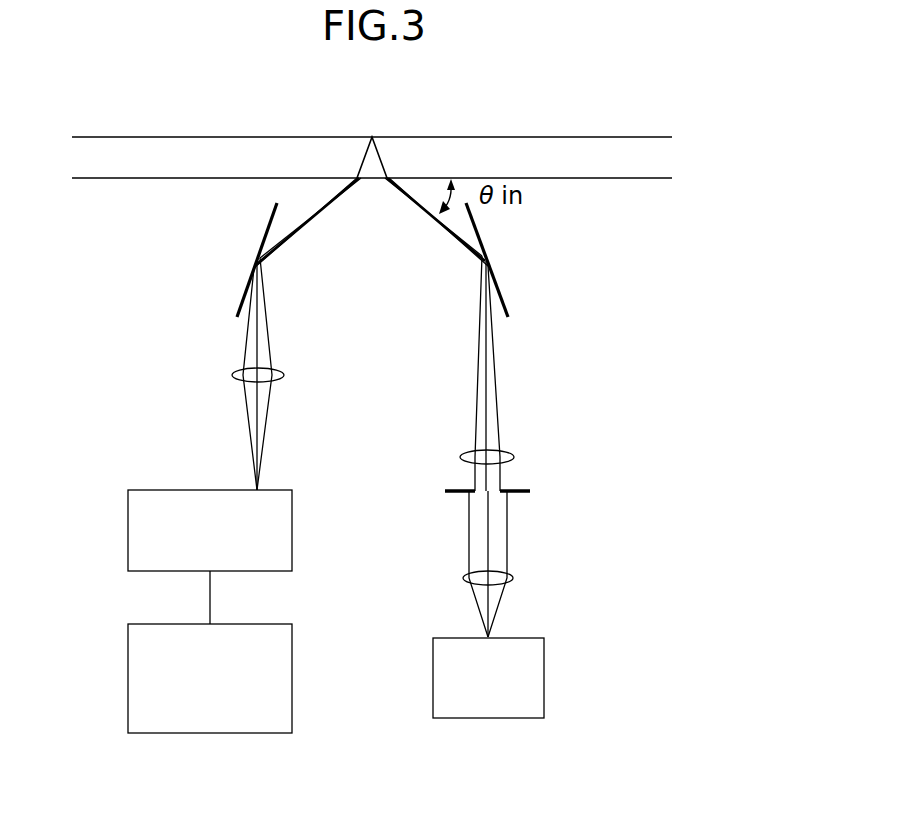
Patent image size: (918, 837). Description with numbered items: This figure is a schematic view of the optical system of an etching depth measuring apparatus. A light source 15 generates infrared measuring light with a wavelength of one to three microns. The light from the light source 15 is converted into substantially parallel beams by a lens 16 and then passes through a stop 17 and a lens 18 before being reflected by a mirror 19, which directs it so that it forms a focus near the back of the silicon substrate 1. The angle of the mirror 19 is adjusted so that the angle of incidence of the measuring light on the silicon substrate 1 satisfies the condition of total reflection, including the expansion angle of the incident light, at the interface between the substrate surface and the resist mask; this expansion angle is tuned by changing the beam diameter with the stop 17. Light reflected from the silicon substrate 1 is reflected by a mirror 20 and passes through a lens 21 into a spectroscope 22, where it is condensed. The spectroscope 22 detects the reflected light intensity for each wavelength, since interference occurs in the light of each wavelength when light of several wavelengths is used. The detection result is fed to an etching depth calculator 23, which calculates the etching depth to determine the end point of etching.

The silicon substrate 1 is at (563, 137).
The light source 15 is at (544, 678).
The lens 16 is at (514, 577).
The stop 17 is at (530, 488).
The lens 18 is at (505, 455).
The mirror 19 is at (503, 297).
The mirror 20 is at (237, 310).
The lens 21 is at (232, 375).
The spectroscope 22 is at (128, 538).
The etching depth calculator 23 is at (128, 686).